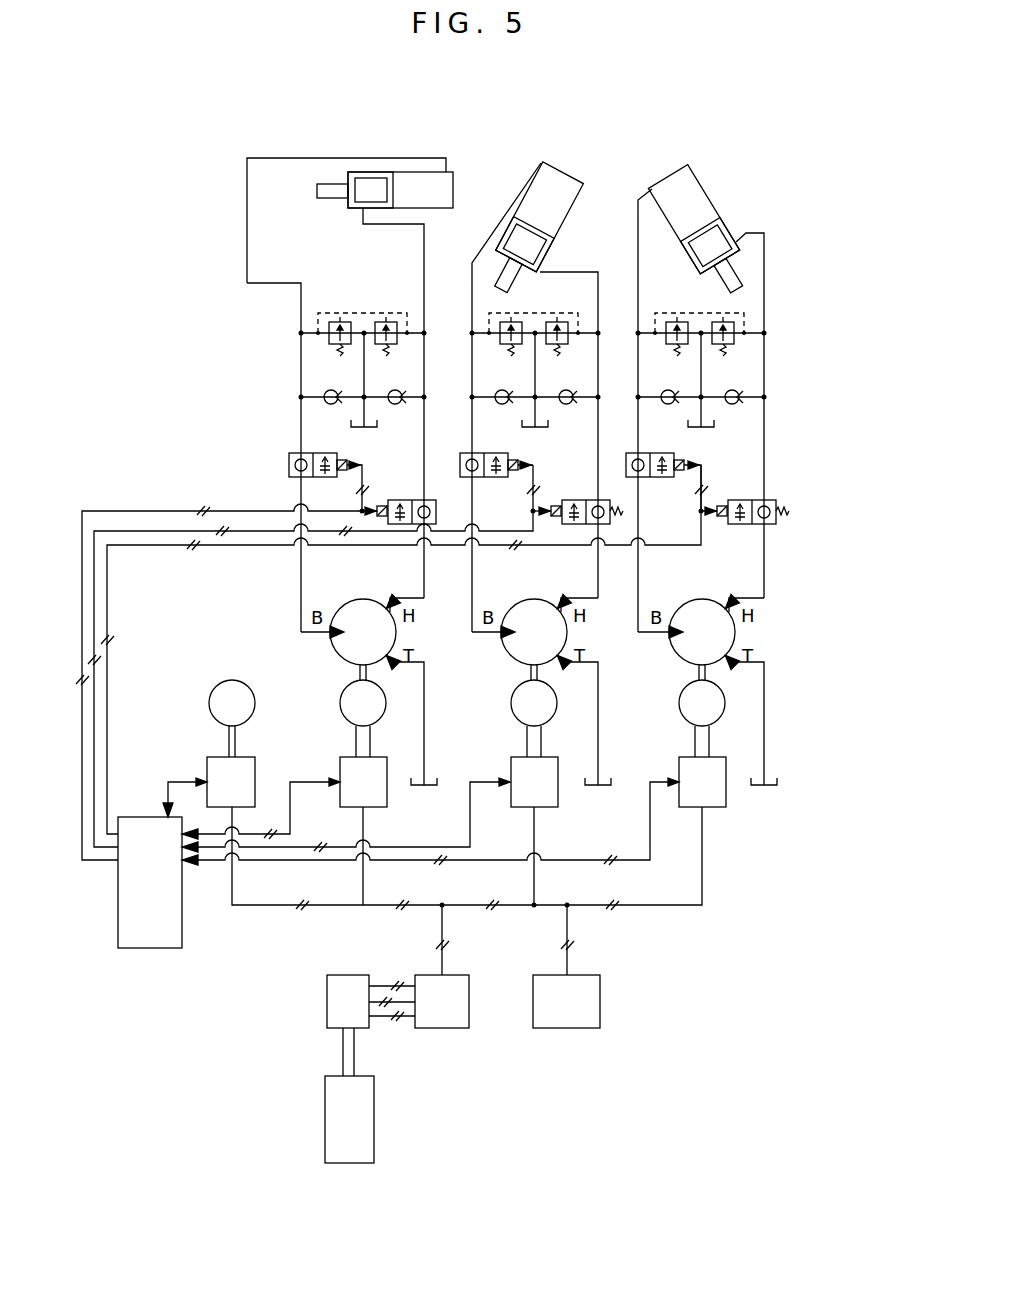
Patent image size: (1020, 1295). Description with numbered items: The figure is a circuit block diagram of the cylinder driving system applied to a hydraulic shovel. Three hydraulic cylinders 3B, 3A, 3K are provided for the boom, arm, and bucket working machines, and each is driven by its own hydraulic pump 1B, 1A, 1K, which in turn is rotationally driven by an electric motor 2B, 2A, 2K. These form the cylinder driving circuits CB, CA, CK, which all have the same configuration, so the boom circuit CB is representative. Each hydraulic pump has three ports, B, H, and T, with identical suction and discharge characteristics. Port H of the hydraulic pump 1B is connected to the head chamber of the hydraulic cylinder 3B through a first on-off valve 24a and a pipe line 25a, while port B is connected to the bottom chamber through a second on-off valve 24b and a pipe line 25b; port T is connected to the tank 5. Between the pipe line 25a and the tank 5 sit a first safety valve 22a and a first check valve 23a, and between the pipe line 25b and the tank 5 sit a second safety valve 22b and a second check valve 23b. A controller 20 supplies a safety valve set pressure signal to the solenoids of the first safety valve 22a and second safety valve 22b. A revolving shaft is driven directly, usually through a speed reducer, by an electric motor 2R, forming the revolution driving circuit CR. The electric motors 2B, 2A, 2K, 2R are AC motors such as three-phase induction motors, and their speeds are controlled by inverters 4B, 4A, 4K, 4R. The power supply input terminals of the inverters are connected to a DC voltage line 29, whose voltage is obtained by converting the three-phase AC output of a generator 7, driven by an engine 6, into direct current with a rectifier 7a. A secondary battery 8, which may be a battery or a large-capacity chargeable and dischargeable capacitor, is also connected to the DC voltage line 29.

The cylinder driving circuit CB is at (298, 148).
The cylinder driving circuit CA is at (503, 148).
The cylinder driving circuit CK is at (648, 150).
The revolution driving circuit CR is at (203, 678).
The hydraulic cylinder 3B is at (418, 172).
The hydraulic cylinder 3A is at (570, 162).
The hydraulic cylinder 3K is at (695, 178).
The pipe line 25a is at (428, 255).
The pipe line 25b is at (301, 303).
The first safety valve 22a is at (385, 322).
The second safety valve 22b is at (342, 322).
The first check valve 23a is at (405, 384).
The second check valve 23b is at (330, 388).
The first on-off valve 24a is at (405, 498).
The second on-off valve 24b is at (300, 453).
The tank 5 is at (378, 427).
The hydraulic pump 1B is at (360, 600).
The hydraulic pump 1A is at (532, 600).
The hydraulic pump 1K is at (702, 600).
The electric motor 2R is at (209, 703).
The electric motor 2B is at (340, 703).
The electric motor 2A is at (511, 703).
The electric motor 2K is at (679, 703).
The inverter 4R is at (207, 762).
The inverter 4B is at (340, 762).
The inverter 4A is at (510, 762).
The inverter 4K is at (679, 762).
The controller 20 is at (150, 948).
The DC voltage line 29 is at (660, 906).
The generator 7 is at (327, 1000).
The rectifier 7a is at (442, 1028).
The secondary battery 8 is at (600, 1000).
The engine 6 is at (325, 1112).